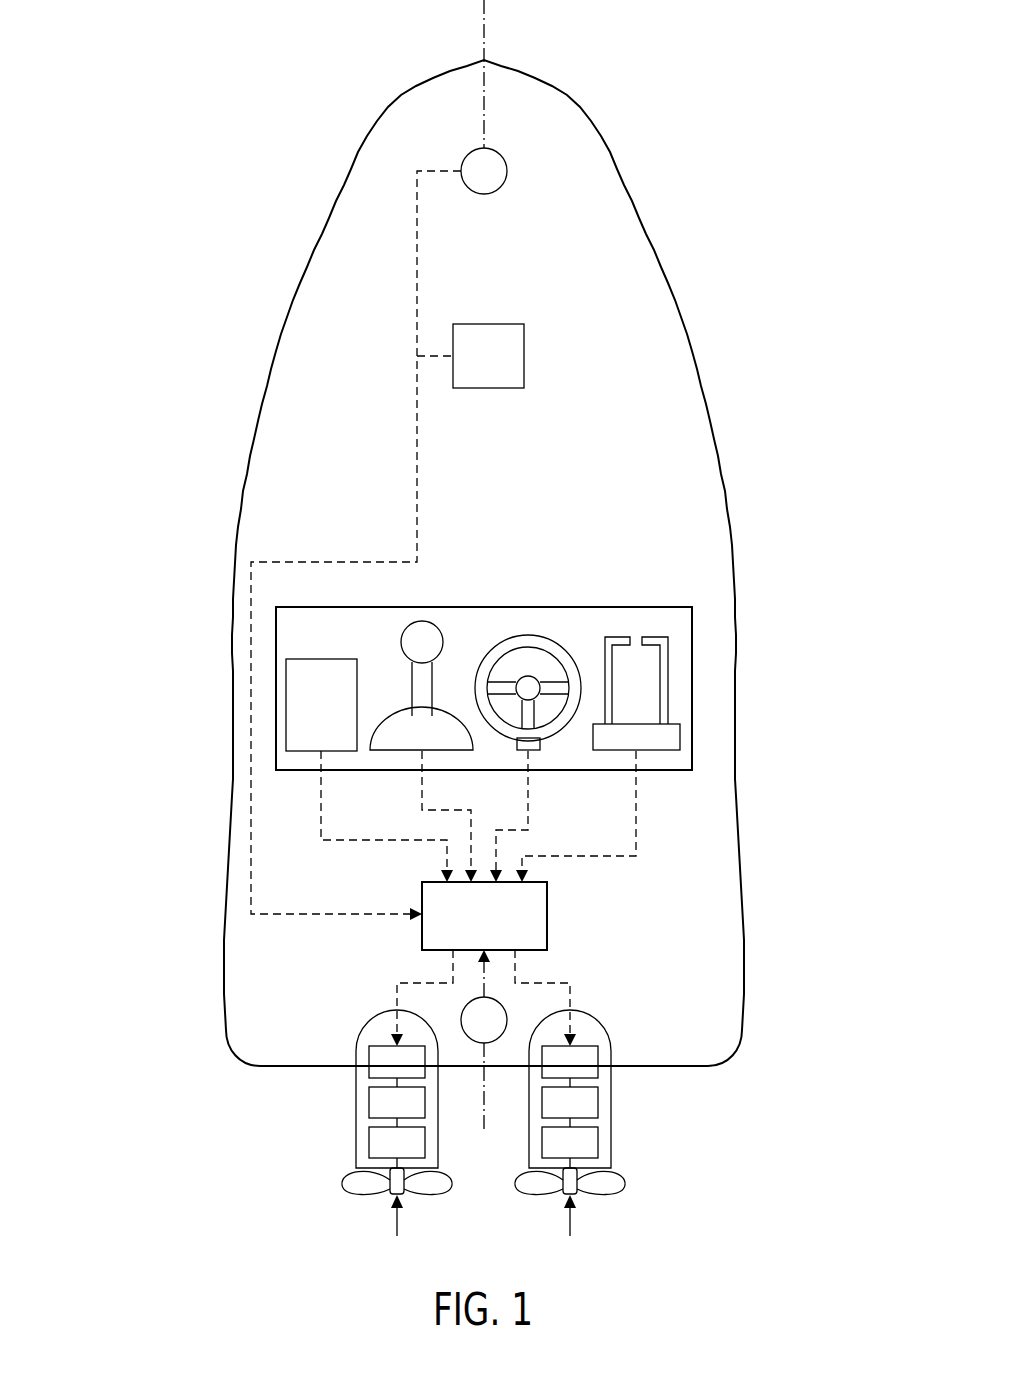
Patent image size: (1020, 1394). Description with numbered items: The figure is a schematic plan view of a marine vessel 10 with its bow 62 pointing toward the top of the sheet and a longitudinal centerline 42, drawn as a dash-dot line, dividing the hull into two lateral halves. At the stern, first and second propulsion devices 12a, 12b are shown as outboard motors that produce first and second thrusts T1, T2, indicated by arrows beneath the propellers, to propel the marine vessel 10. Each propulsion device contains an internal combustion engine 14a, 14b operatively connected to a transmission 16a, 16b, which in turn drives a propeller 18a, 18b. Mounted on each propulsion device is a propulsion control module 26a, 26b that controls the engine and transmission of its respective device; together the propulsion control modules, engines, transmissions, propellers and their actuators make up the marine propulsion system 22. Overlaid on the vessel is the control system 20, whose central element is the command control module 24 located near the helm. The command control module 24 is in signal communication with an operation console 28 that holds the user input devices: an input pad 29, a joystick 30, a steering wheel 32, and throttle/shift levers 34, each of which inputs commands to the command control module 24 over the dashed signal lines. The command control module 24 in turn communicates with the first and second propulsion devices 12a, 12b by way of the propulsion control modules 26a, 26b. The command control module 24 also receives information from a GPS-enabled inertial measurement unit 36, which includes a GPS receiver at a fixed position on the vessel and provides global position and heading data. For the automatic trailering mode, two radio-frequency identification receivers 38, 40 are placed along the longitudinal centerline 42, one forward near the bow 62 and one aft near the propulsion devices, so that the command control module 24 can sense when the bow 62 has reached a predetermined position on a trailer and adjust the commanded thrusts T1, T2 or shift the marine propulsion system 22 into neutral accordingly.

The marine vessel 10 is at (611, 159).
The first propulsion device 12a is at (379, 1015).
The second propulsion device 12b is at (589, 1015).
The internal combustion engine 14a is at (369, 1103).
The internal combustion engine 14b is at (598, 1103).
The transmission 16a is at (369, 1142).
The transmission 16b is at (598, 1142).
The propeller 18a is at (350, 1196).
The propeller 18b is at (620, 1195).
The control system 20 is at (656, 863).
The marine propulsion system 22 is at (467, 1172).
The command control module 24 is at (547, 914).
The propulsion control module 26a is at (378, 1046).
The propulsion control module 26b is at (589, 1046).
The operation console 28 is at (636, 606).
The input pad 29 is at (321, 658).
The joystick 30 is at (401, 715).
The steering wheel 32 is at (528, 636).
The throttle/shift lever 34 is at (616, 636).
The GPS-enabled inertial measurement unit 36 is at (489, 324).
The RFID receiver 38 is at (484, 194).
The RFID receiver 40 is at (466, 1004).
The longitudinal centerline 42 is at (483, 44).
The bow 62 is at (541, 70).
The first thrust T1 is at (397, 1222).
The second thrust T2 is at (570, 1222).